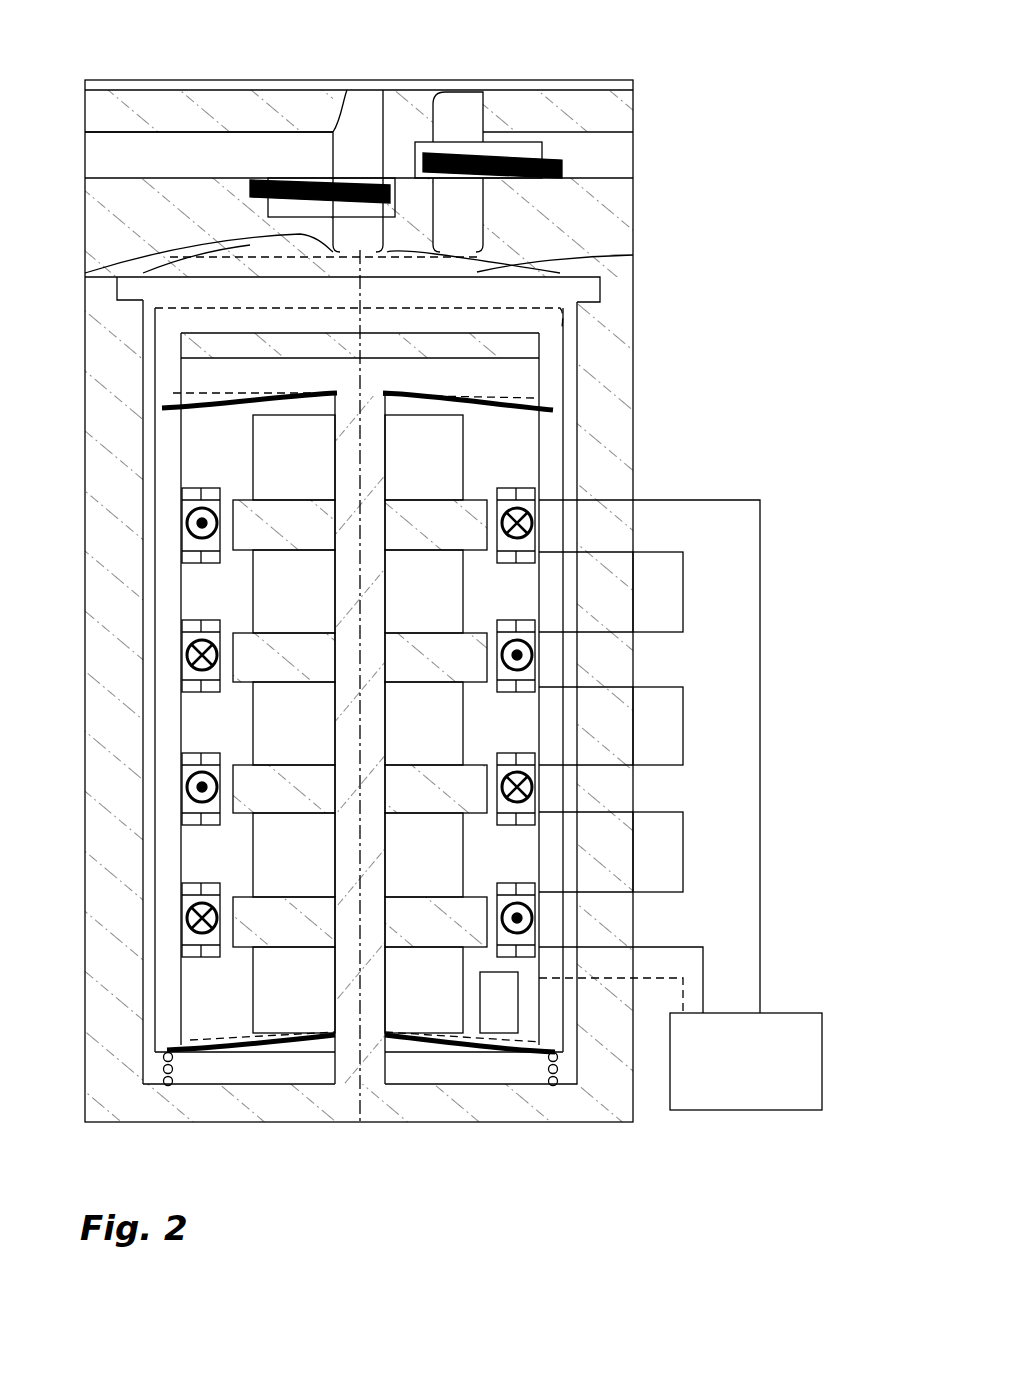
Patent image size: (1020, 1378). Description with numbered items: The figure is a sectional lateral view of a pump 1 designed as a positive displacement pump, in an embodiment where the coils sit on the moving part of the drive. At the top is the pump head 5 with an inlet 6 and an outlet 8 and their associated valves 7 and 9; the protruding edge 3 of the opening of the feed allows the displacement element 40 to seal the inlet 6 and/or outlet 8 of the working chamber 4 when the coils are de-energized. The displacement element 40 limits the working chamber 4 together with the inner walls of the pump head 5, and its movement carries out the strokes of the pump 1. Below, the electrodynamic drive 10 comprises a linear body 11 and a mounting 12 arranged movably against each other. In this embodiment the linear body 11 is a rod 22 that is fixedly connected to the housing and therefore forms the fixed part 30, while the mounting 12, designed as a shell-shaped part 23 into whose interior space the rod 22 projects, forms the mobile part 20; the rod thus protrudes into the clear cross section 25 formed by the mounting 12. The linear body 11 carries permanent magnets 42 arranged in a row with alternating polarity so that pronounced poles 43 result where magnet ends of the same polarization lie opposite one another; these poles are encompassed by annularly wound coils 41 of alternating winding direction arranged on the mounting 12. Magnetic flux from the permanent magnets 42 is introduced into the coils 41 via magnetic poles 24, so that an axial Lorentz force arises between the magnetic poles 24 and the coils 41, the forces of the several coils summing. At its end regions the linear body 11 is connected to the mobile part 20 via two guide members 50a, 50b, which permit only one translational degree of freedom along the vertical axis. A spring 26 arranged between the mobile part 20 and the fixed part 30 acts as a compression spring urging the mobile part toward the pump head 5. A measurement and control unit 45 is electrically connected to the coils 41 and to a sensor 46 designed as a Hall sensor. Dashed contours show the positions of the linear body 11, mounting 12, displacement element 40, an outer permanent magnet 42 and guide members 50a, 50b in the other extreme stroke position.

The pump 1 is at (722, 222).
The protruding edge 3 is at (100, 262).
The working chamber 4 is at (565, 272).
The pump head 5 is at (612, 232).
The inlet 6 is at (320, 115).
The valve 7 is at (360, 182).
The outlet 8 is at (455, 112).
The valve 9 is at (590, 160).
The drive 10 is at (553, 1172).
The linear body 11 is at (380, 1035).
The mounting 12 is at (165, 870).
The mobile part 20 is at (575, 383).
The rod 22 is at (335, 1082).
The shell-shaped part 23 is at (553, 477).
The magnetic poles 24 is at (232, 565).
The clear cross section 25 is at (200, 725).
The spring 26 is at (168, 1085).
The fixed part 30 is at (390, 454).
The displacement element 40 is at (575, 289).
The coils 41 is at (198, 935).
The permanent magnets 42 is at (405, 995).
The poles 43 is at (233, 668).
The measurement and control unit 45 is at (812, 1060).
The sensor 46 is at (508, 1015).
The guide member 50a is at (200, 413).
The guide member 50b is at (240, 1060).